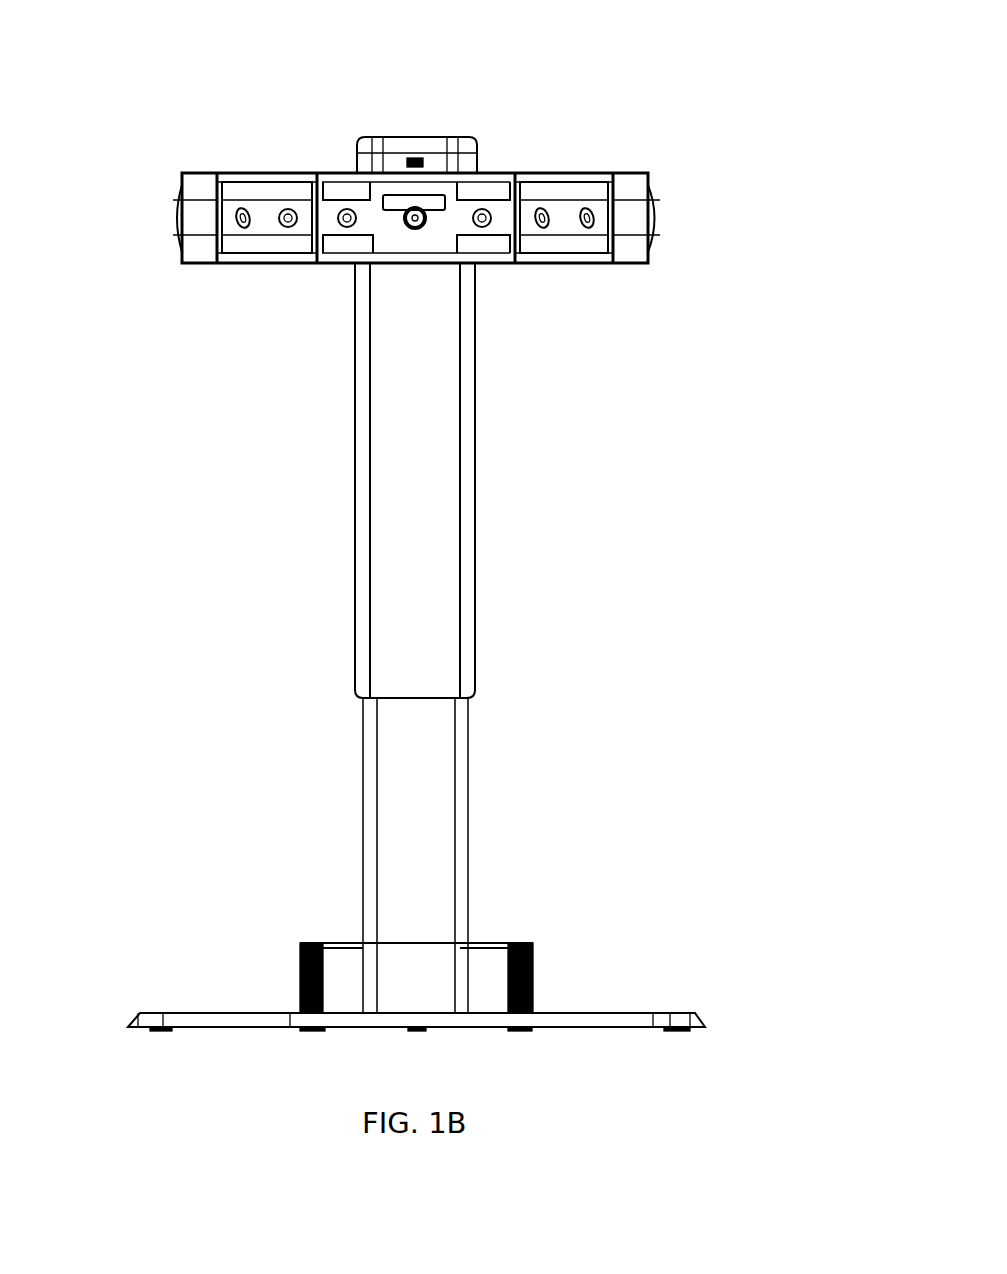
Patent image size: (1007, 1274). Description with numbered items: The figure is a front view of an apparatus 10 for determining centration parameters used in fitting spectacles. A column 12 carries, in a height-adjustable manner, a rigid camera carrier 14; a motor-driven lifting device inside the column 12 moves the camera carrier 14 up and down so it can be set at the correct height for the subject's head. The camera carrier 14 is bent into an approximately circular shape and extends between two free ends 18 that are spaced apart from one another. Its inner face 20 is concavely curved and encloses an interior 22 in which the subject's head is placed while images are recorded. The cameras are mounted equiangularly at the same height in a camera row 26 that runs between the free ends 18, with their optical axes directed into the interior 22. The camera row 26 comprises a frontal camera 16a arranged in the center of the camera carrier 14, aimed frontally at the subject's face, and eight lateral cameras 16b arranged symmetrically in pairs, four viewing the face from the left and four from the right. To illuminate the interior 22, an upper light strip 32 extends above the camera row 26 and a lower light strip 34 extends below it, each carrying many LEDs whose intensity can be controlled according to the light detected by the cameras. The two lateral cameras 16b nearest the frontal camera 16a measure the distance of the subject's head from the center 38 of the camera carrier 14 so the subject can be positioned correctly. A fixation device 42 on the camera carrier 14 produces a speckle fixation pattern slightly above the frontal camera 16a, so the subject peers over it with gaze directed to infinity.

The apparatus 10 is at (664, 118).
The column 12 is at (465, 664).
The camera carrier 14 is at (211, 172).
The frontal camera 16a is at (481, 207).
The lateral cameras 16b is at (342, 214).
The free ends 18 is at (193, 252).
The inner face 20 is at (364, 265).
The interior 22 is at (520, 302).
The camera row 26 is at (240, 284).
The upper light strip 32 is at (240, 190).
The lower light strip 34 is at (264, 245).
The center of the camera carrier 38 is at (411, 228).
The fixation device 42 is at (405, 195).